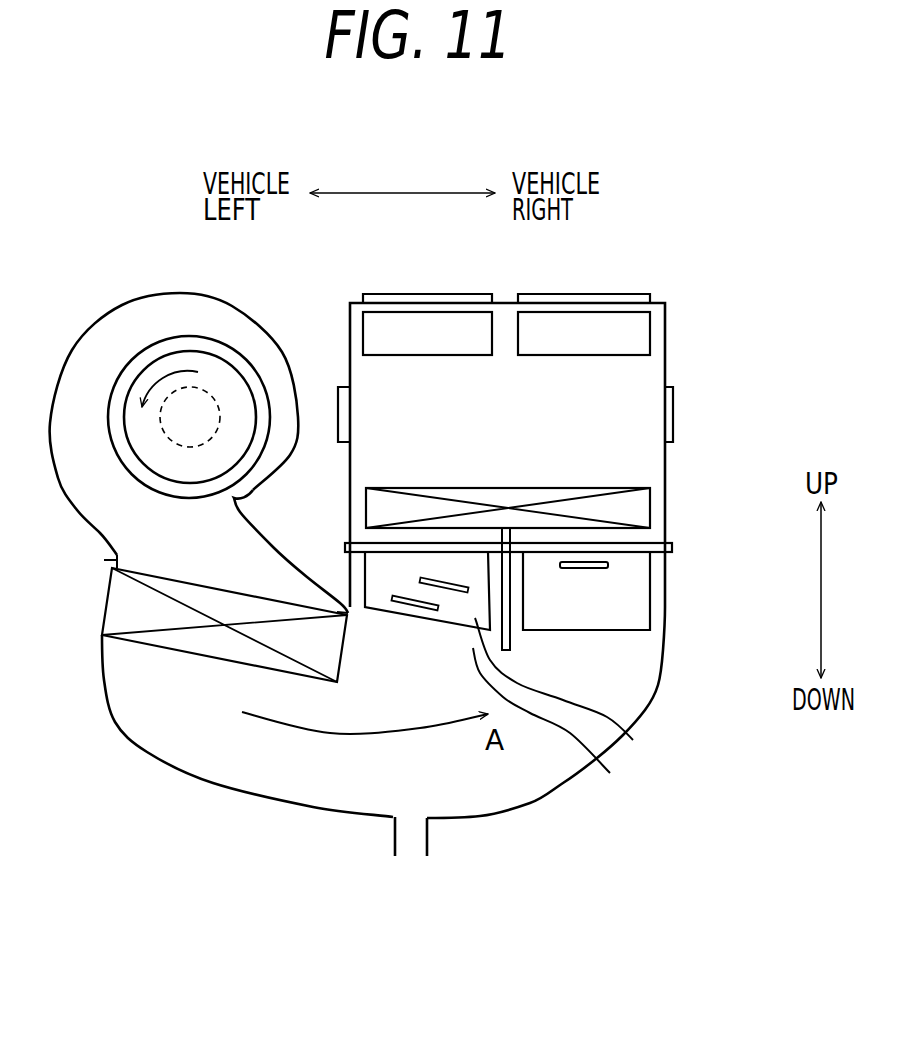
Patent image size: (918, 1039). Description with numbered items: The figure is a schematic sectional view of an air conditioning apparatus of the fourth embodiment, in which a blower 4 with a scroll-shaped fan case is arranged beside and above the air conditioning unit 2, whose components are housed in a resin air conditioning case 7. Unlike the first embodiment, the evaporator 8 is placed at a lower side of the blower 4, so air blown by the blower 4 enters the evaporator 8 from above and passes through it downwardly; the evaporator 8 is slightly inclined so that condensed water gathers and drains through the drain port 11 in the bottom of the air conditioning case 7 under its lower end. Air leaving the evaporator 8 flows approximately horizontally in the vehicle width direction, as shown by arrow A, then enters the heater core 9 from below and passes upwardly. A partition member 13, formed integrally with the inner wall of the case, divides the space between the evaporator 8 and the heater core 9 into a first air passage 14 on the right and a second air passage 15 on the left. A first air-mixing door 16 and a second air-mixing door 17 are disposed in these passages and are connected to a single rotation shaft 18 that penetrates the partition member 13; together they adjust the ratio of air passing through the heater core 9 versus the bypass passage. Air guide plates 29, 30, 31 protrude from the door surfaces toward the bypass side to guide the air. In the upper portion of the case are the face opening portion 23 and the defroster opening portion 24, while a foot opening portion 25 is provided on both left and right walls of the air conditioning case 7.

The air conditioning unit 2 is at (682, 548).
The blower 4 is at (87, 330).
The air conditioning case 7 is at (665, 460).
The evaporator 8 is at (130, 607).
The heater core 9 is at (635, 503).
The drain port 11 is at (410, 845).
The partition member 13 is at (510, 597).
The first air passage 14 is at (623, 653).
The second air passage 15 is at (556, 725).
The first air-mixing door 16 is at (633, 620).
The second air-mixing door 17 is at (574, 691).
The rotation shaft 18 is at (628, 545).
The face opening portion 23 is at (373, 333).
The defroster opening portion 24 is at (424, 294).
The foot opening portion 25 is at (338, 410).
The air guide plate 29 is at (608, 565).
The air guide plate 30 is at (430, 577).
The air guide plate 31 is at (402, 596).